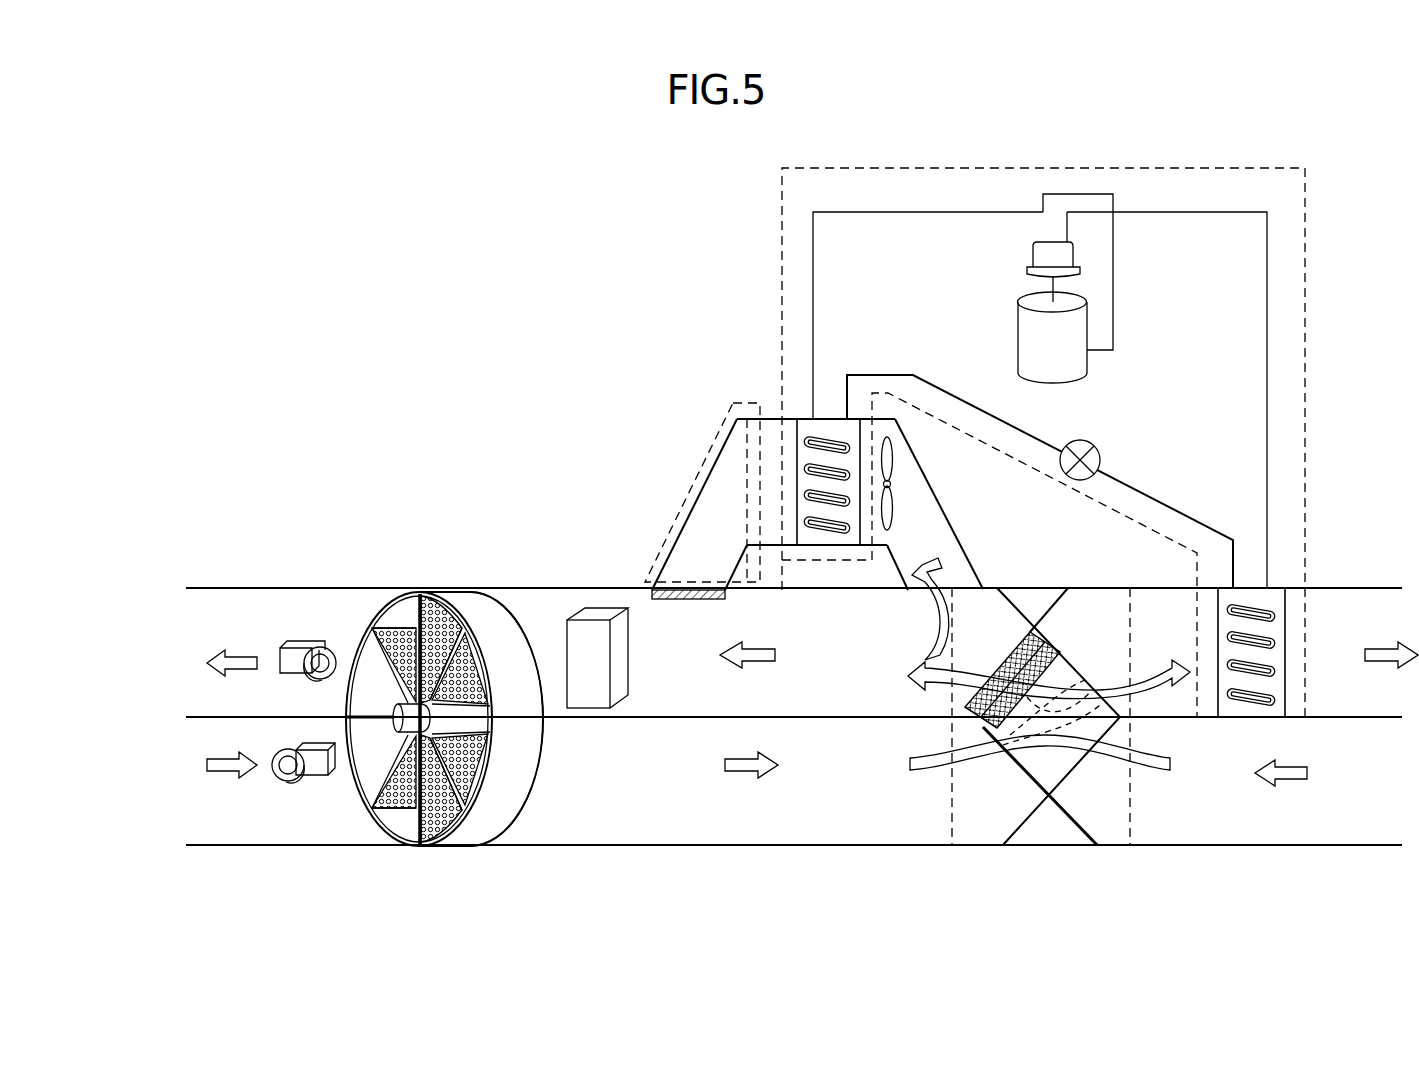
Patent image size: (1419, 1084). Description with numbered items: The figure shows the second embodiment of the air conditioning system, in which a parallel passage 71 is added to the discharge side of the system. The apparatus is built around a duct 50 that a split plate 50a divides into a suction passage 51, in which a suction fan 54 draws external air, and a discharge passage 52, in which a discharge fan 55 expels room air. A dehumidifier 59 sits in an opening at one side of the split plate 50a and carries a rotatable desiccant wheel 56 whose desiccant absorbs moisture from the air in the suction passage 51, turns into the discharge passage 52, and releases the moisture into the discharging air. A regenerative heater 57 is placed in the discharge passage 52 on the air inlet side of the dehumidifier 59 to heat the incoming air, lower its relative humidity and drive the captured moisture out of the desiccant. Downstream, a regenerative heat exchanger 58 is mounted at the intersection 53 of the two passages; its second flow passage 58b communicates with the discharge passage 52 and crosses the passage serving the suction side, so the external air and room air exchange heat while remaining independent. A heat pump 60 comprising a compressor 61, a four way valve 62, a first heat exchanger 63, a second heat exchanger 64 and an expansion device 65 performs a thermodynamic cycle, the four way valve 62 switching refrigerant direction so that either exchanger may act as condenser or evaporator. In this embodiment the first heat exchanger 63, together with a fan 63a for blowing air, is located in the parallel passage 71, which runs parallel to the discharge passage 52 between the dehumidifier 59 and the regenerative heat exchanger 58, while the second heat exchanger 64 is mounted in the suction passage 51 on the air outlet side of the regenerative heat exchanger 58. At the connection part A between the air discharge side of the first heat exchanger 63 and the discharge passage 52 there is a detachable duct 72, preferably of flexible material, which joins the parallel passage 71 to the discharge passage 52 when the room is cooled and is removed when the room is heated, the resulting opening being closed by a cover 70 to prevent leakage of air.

The duct 50 is at (360, 588).
The split plate 50a is at (230, 717).
The suction passage 51 is at (238, 812).
The discharge passage 52 is at (252, 620).
The intersection 53 is at (1131, 808).
The suction fan 54 is at (300, 783).
The discharge fan 55 is at (311, 647).
The desiccant wheel 56 is at (468, 830).
The regenerative heater 57 is at (588, 617).
The regenerative heat exchanger 58 is at (1062, 762).
The second flow passage 58b is at (962, 705).
The dehumidifier 59 is at (524, 750).
The heat pump 60 is at (1237, 168).
The compressor 61 is at (1025, 352).
The four way valve 62 is at (1030, 253).
The first heat exchanger 63 is at (808, 422).
The fan 63a is at (893, 457).
The second heat exchanger 64 is at (1300, 610).
The expansion device 65 is at (1095, 446).
The cover 70 is at (652, 598).
The parallel passage 71 is at (960, 533).
The detachable duct 72 is at (703, 510).
The connection part A is at (712, 447).